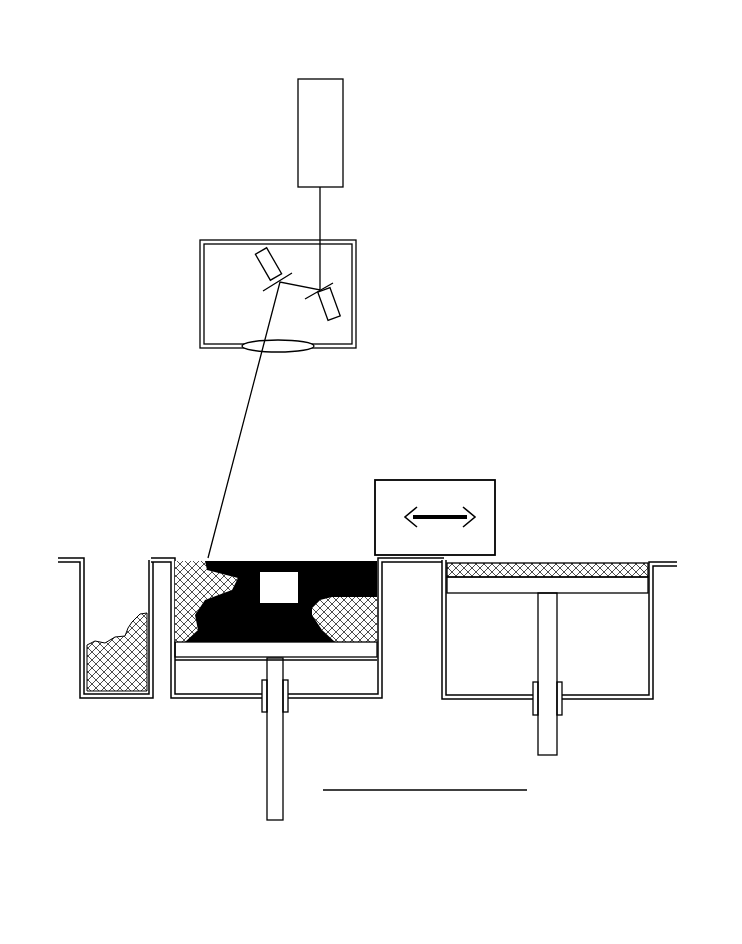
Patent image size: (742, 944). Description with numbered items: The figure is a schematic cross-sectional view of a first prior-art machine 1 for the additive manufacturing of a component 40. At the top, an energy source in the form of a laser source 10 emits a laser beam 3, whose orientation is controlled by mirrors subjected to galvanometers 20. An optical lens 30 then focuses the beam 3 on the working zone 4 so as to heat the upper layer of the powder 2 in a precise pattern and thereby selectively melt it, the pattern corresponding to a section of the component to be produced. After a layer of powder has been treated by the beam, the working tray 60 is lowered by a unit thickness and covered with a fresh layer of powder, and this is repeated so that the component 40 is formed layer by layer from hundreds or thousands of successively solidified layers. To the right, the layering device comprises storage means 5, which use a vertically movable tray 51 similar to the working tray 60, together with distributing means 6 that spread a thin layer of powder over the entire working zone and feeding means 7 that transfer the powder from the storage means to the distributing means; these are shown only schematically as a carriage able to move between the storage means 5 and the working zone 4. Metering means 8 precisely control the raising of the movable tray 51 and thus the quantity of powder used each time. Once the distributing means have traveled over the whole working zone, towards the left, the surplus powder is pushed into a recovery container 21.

The additive manufacturing apparatus 1 is at (127, 353).
The powder 2 is at (110, 673).
The laser beam 3 is at (236, 440).
The working zone 4 is at (298, 528).
The storage means 5 is at (573, 532).
The distributing means 6 is at (436, 471).
The feeding means 7 is at (473, 462).
The metering means 8 is at (549, 660).
The laser source 10 is at (315, 93).
The mirrors subjected to galvanometers 20 is at (268, 262).
The recovery container 21 is at (106, 603).
The optical lens 30 is at (283, 350).
The component 40 is at (268, 598).
The movable tray 51 is at (504, 586).
The working tray 60 is at (312, 652).